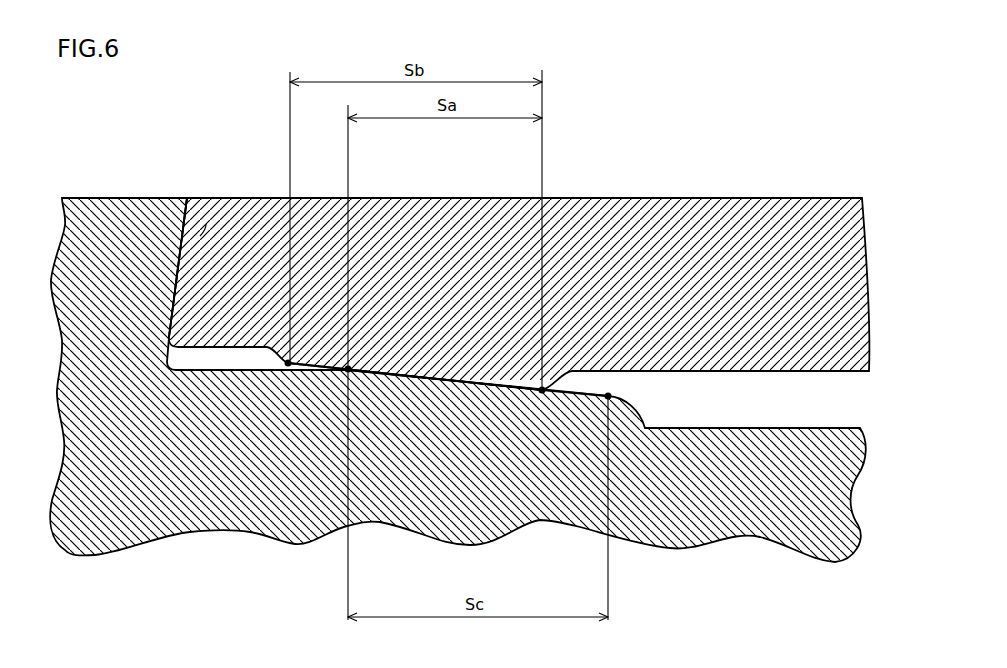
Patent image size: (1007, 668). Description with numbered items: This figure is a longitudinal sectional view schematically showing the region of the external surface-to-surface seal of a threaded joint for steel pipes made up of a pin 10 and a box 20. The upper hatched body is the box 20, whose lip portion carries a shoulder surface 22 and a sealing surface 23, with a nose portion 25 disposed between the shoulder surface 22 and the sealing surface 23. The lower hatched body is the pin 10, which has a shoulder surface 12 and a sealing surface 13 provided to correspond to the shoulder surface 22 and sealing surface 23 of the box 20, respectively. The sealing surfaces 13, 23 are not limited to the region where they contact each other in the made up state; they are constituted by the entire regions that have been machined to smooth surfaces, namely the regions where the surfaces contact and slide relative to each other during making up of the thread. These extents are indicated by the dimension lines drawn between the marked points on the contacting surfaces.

The pin 10 is at (128, 562).
The box 20 is at (797, 188).
The shoulder surface 12 is at (167, 238).
The shoulder surface 22 is at (207, 232).
The nose portion 25 is at (222, 346).
The sealing surface 23 is at (453, 380).
The sealing surface 13 is at (436, 381).